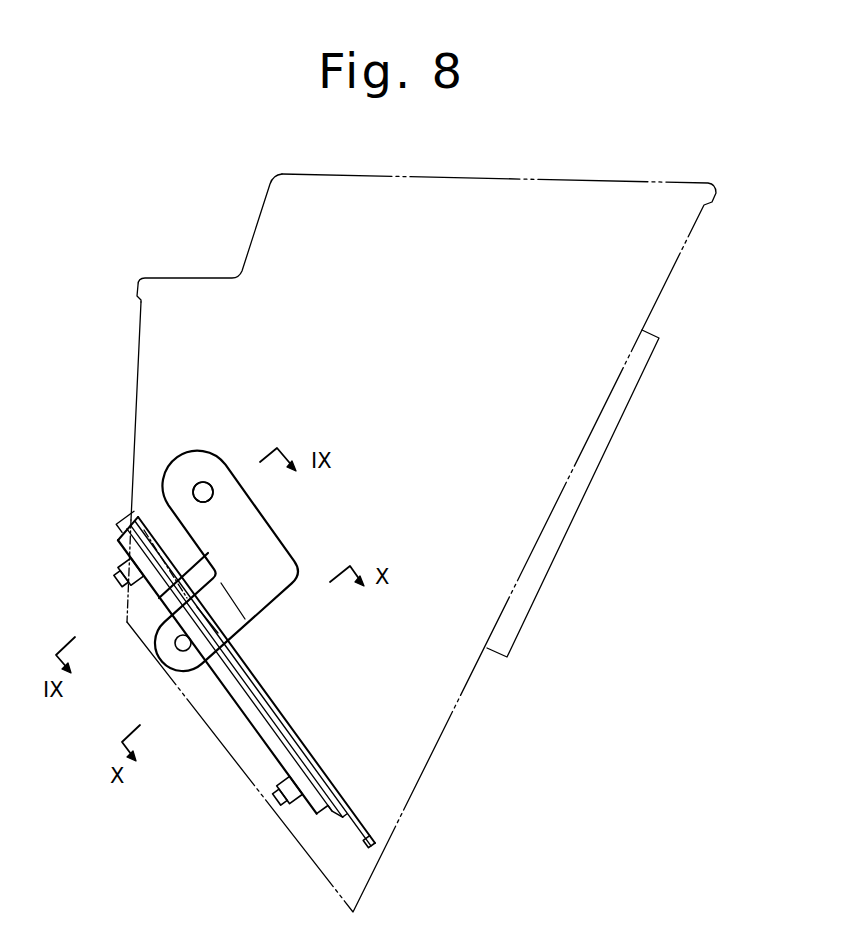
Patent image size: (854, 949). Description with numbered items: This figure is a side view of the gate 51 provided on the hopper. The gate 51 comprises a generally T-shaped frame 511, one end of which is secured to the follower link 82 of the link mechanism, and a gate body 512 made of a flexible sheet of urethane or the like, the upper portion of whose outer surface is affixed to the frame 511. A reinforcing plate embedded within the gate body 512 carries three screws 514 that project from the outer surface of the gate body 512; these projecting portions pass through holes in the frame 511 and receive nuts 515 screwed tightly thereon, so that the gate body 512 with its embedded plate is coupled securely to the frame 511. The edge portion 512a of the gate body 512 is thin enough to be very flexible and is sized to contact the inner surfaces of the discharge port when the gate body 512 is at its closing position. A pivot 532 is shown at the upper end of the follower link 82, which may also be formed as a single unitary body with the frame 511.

The gate 51 is at (232, 692).
The frame 511 is at (229, 677).
The gate body 512 is at (242, 685).
The edge portion 512a is at (369, 842).
The screws 514 is at (210, 681).
The nuts 515 is at (262, 765).
The follower link 82 is at (284, 588).
The pin hole 532 is at (200, 487).